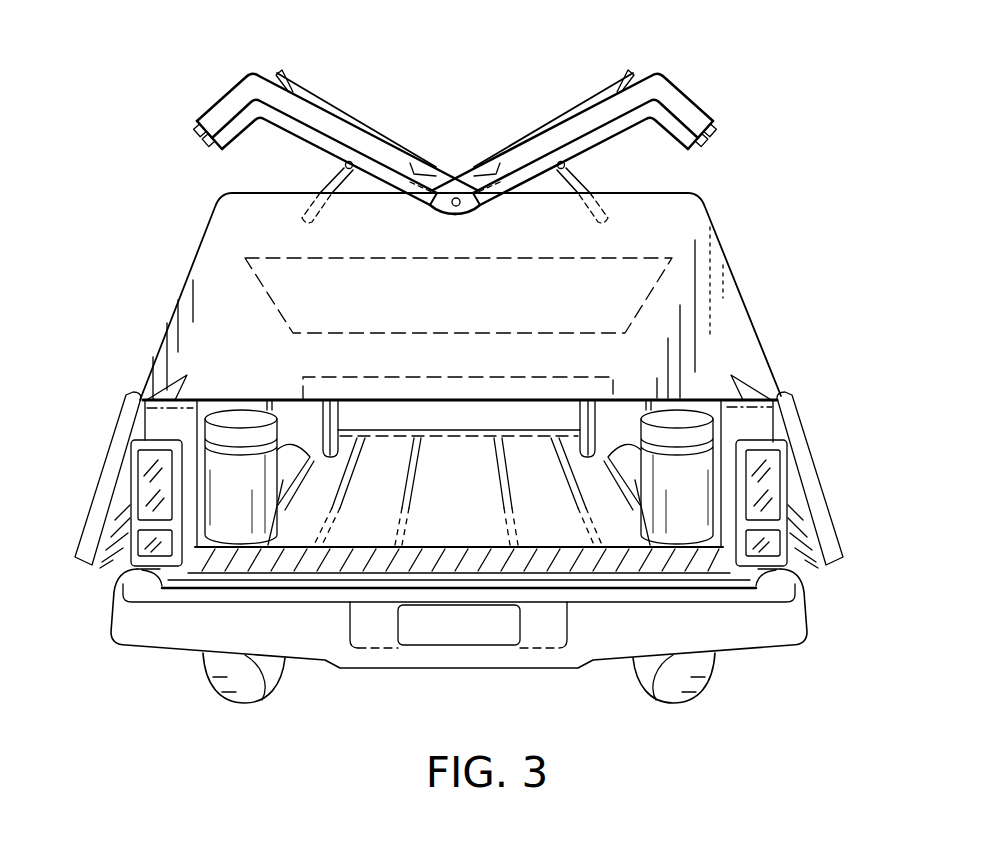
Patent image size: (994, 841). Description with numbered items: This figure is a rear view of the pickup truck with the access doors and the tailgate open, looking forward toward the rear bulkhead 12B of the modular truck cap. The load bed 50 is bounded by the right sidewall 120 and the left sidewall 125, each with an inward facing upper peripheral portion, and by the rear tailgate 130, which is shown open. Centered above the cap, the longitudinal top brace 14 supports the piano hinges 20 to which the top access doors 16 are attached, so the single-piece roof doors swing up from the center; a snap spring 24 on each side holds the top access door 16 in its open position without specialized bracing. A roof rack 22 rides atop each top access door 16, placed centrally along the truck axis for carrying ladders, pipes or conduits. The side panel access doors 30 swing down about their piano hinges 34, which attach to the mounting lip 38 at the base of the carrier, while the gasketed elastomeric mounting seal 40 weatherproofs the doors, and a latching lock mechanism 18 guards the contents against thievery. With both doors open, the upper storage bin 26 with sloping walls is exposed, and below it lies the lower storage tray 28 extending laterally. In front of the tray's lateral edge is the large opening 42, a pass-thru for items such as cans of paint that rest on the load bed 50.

The rear bulkhead 12B is at (548, 242).
The top brace 14 is at (455, 138).
The top access door 16 is at (222, 98).
The latching lock mechanism 18 is at (203, 140).
The piano hinge 20 is at (456, 197).
The roof rack 22 is at (348, 107).
The snap spring 24 is at (333, 178).
The upper storage bin 26 is at (368, 259).
The lower storage tray 28 is at (513, 377).
The side panel access door 30 is at (102, 475).
The piano hinge 34 is at (138, 395).
The mounting lip 38 is at (463, 374).
The gasketed elastomeric mounting seal 40 is at (187, 375).
The large opening 42 is at (240, 386).
The load bed 50 is at (432, 516).
The right sidewall 120 is at (790, 547).
The left sidewall 125 is at (130, 543).
The rear tailgate 130 is at (482, 592).